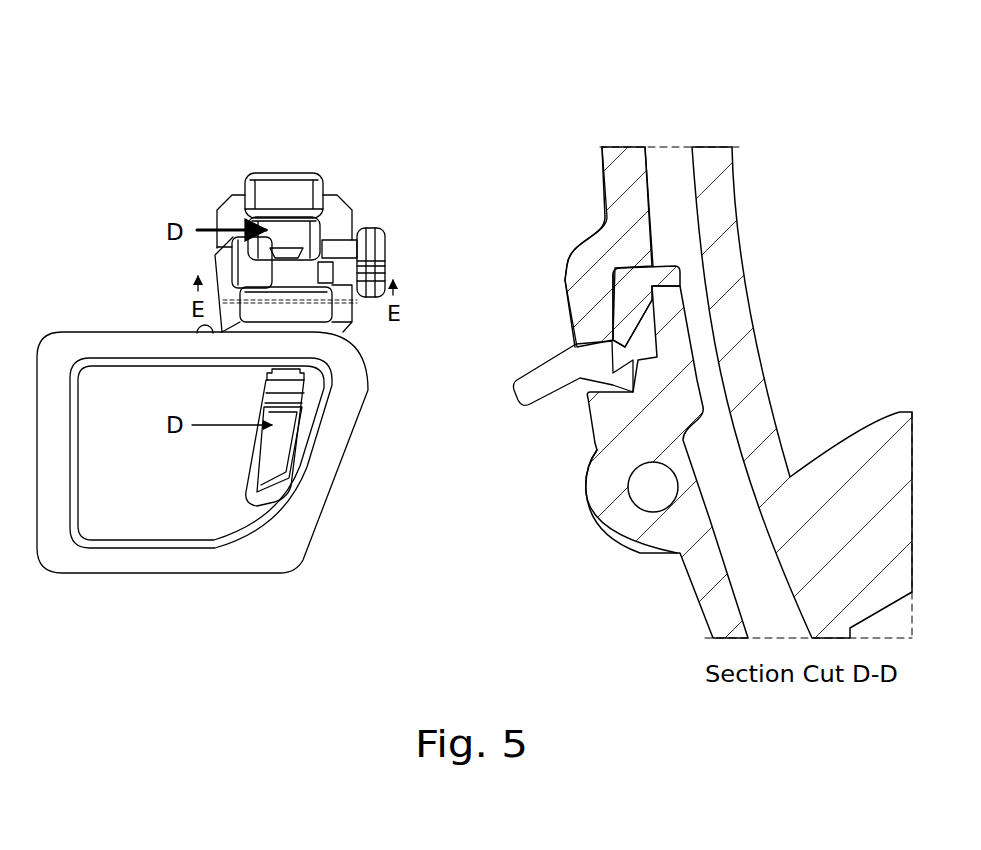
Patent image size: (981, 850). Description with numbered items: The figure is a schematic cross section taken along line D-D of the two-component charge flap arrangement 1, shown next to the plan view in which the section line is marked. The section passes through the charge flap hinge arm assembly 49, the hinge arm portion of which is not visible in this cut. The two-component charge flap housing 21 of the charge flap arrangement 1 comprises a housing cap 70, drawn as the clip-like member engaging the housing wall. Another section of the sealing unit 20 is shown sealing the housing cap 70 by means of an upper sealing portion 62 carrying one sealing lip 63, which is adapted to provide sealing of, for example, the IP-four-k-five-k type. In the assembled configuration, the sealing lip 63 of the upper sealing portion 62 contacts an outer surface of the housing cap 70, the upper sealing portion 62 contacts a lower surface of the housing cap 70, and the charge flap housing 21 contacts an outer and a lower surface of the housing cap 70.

The 2K charge flap arrangement 1 is at (265, 127).
The housing cap 70 is at (344, 187).
The charge flap hinge arm assembly 49 is at (336, 403).
The upper sealing portion 62 is at (670, 263).
The sealing lip 63 is at (612, 322).
The 2K charge flap housing 21 is at (593, 452).
The sealing unit 20 is at (583, 522).